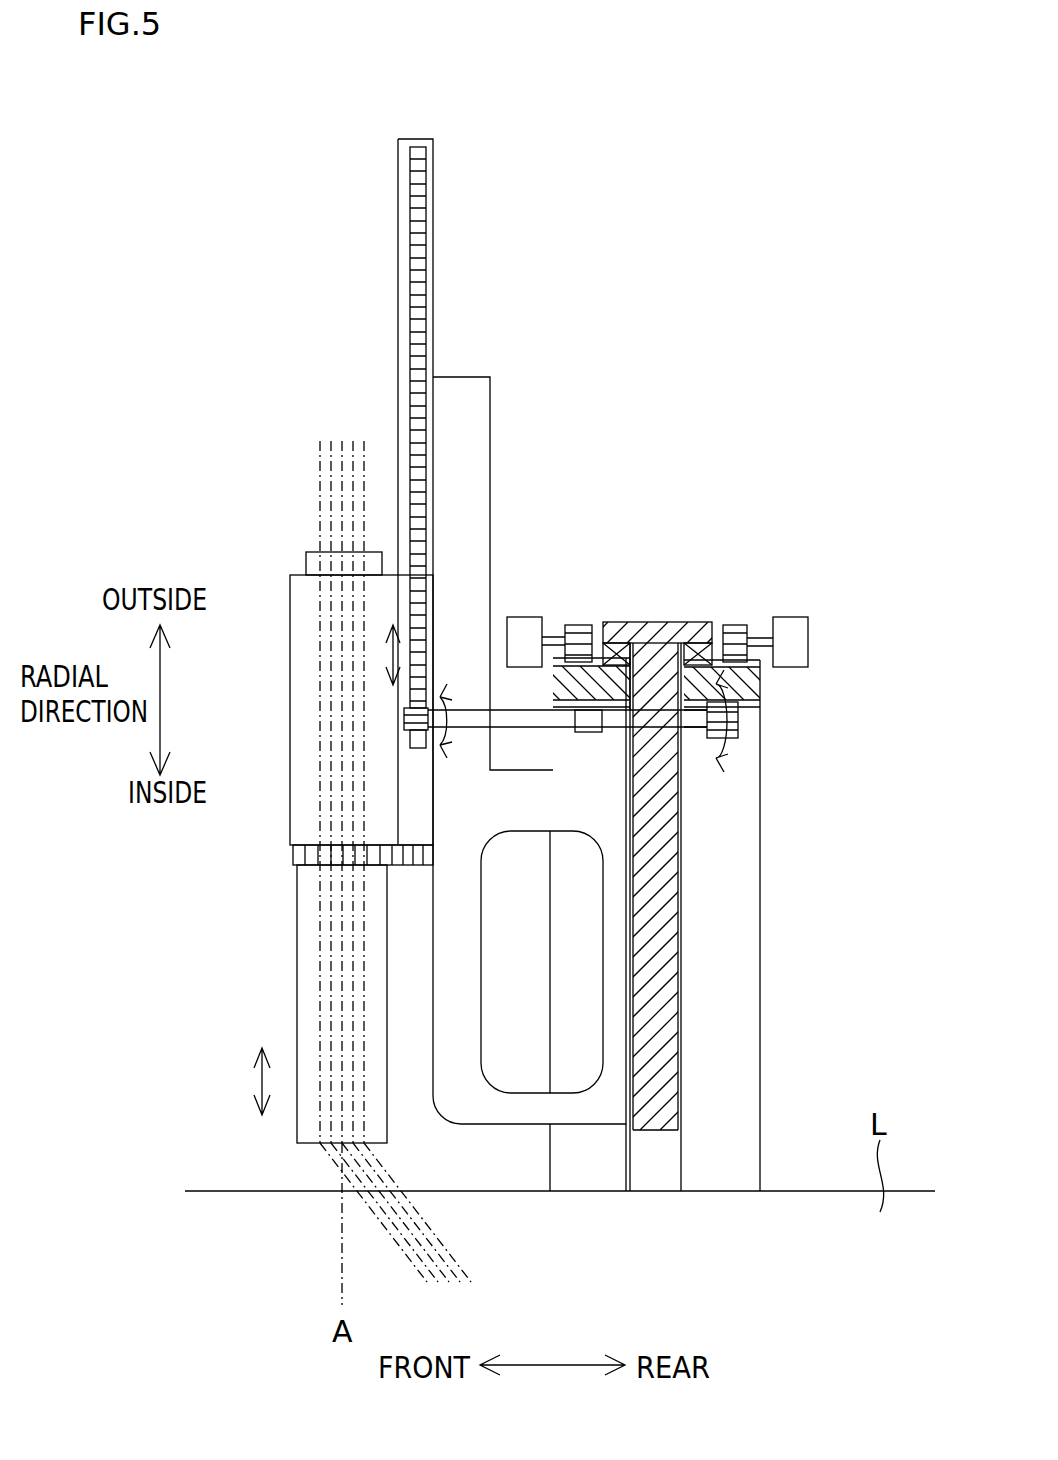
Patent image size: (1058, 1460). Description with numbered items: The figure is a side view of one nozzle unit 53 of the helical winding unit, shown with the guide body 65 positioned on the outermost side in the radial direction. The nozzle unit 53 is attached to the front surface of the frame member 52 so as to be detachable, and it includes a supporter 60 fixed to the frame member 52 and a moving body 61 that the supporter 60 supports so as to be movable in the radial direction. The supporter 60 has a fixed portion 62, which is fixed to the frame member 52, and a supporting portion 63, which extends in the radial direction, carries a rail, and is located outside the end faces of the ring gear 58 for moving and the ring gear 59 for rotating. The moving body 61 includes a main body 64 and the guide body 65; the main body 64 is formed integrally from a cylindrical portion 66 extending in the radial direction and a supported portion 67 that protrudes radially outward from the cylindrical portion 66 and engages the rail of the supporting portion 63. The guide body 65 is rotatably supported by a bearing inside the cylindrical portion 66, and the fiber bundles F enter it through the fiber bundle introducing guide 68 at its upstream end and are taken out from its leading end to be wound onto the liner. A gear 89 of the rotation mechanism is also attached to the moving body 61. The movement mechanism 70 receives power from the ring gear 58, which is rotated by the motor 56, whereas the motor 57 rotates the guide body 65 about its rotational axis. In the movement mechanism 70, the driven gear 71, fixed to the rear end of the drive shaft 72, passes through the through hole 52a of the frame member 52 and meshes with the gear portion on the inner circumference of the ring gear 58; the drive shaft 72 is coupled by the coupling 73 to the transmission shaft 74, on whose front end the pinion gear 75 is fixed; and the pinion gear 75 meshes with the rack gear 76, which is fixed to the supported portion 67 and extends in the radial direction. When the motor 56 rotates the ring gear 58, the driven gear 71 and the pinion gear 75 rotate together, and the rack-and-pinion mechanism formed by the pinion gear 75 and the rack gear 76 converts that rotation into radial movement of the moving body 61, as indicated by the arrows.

The nozzle unit 53 is at (207, 183).
The moving body 61 is at (298, 381).
The fiber bundles F is at (322, 447).
The main body 64 is at (276, 562).
The cylindrical portion 66 is at (300, 683).
The fiber bundle introducing guide 68 is at (312, 556).
The gear 89 is at (293, 855).
The guide body 65 is at (273, 1006).
The supported portion 67 is at (398, 241).
The rack gear 76 is at (412, 297).
The supporter 60 is at (517, 393).
The supporting portion 63 is at (473, 458).
The fixed portion 62 is at (610, 920).
The transmission shaft 74 is at (468, 727).
The pinion gear 75 is at (404, 720).
The coupling 73 is at (588, 732).
The motor 57 is at (520, 617).
The ring gear for rotating 59 is at (590, 668).
The frame member 52 is at (668, 925).
The through hole 52a is at (656, 700).
The movement mechanism 70 is at (742, 774).
The driven gear 71 is at (738, 715).
The drive shaft 72 is at (692, 727).
The ring gear for moving 58 is at (720, 665).
The motor 56 is at (787, 617).